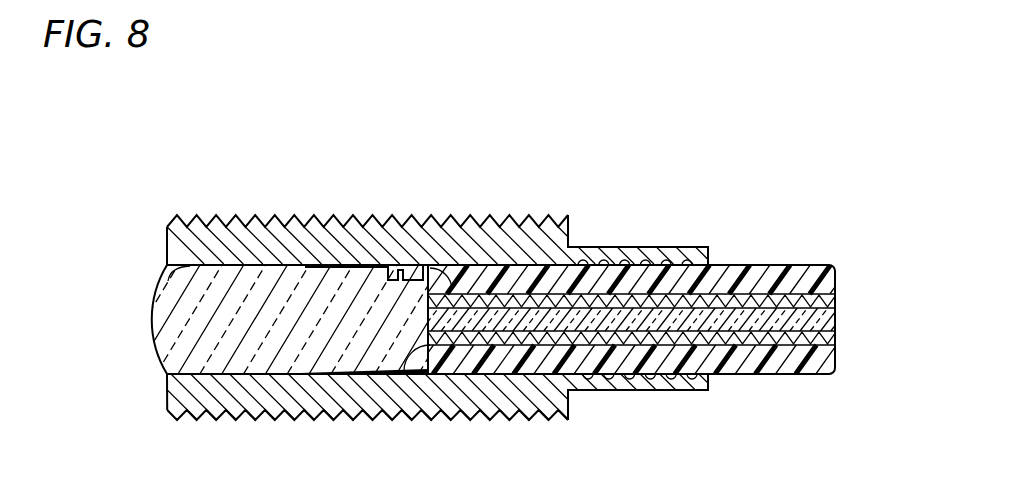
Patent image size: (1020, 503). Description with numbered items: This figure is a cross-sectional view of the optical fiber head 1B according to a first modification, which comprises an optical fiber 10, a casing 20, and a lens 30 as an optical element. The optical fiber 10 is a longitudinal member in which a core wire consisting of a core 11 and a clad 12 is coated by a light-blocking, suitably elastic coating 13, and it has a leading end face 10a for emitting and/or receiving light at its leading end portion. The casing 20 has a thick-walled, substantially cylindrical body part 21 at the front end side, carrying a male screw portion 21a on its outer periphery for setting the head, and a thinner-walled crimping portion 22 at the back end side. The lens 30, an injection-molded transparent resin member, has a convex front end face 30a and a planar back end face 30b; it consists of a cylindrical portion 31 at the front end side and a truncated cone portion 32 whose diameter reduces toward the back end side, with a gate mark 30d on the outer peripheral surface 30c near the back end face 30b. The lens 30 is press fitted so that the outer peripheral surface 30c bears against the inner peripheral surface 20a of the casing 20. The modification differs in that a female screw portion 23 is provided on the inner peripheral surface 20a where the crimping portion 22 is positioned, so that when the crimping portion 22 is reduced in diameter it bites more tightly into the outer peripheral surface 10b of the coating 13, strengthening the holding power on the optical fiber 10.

The optical fiber head 1B is at (722, 155).
The optical fiber 10 is at (777, 258).
The leading end face 10a is at (412, 375).
The outer peripheral surface of the coating 10b is at (518, 377).
The core 11 is at (625, 322).
The clad 12 is at (685, 342).
The coating 13 is at (747, 362).
The casing 20 is at (193, 209).
The inner peripheral surface 20a is at (163, 276).
The body part 21 is at (526, 244).
The male screw portion 21a is at (288, 221).
The crimping portion 22 is at (617, 262).
The female screw portion 23 is at (653, 272).
The lens 30 is at (150, 318).
The front end face 30a is at (154, 342).
The back end face 30b is at (447, 291).
The outer peripheral surface 30c is at (242, 376).
The gate mark 30d is at (405, 278).
The cylindrical portion 31 is at (238, 305).
The truncated cone portion 32 is at (357, 300).